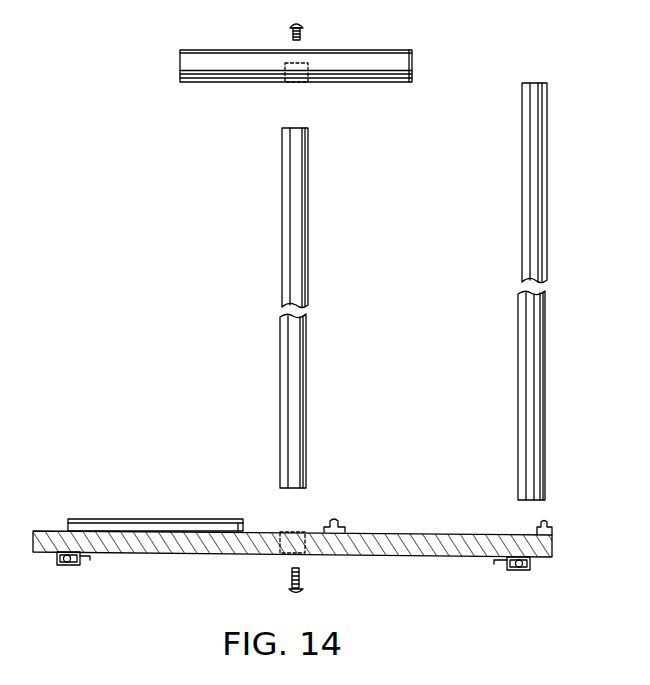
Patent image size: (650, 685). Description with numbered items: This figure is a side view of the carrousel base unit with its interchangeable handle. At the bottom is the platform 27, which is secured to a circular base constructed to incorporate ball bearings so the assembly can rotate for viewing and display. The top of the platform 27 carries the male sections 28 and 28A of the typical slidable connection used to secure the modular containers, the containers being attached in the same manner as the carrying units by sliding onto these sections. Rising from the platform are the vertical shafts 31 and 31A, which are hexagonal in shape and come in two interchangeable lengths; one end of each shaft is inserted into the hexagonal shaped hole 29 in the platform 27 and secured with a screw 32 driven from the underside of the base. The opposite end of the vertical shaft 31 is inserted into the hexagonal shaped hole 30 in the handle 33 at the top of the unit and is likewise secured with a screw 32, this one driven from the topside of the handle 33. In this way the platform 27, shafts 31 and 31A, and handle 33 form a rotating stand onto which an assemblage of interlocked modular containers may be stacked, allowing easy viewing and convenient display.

The platform 27 is at (385, 555).
The male section 28 is at (128, 518).
The male section 28A is at (553, 528).
The hexagonal shaped hole 29 is at (291, 532).
The hexagonal shaped hole 30 is at (297, 83).
The vertical shaft 31 is at (283, 220).
The vertical shaft 31A is at (521, 226).
The screw 32 is at (298, 22).
The handle 33 is at (240, 50).